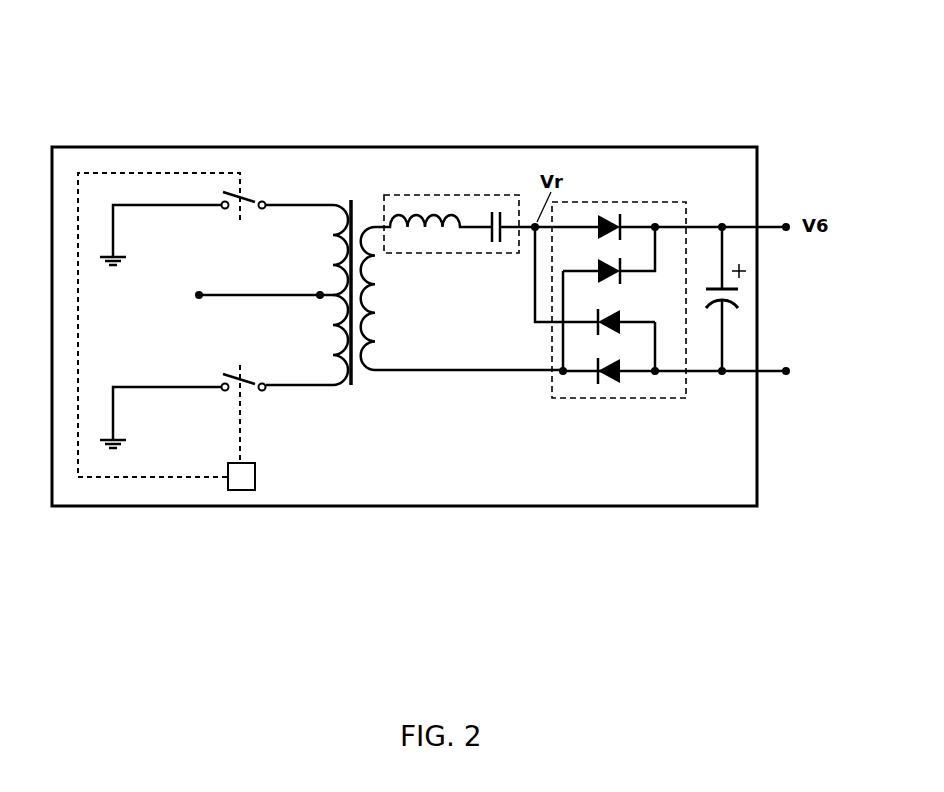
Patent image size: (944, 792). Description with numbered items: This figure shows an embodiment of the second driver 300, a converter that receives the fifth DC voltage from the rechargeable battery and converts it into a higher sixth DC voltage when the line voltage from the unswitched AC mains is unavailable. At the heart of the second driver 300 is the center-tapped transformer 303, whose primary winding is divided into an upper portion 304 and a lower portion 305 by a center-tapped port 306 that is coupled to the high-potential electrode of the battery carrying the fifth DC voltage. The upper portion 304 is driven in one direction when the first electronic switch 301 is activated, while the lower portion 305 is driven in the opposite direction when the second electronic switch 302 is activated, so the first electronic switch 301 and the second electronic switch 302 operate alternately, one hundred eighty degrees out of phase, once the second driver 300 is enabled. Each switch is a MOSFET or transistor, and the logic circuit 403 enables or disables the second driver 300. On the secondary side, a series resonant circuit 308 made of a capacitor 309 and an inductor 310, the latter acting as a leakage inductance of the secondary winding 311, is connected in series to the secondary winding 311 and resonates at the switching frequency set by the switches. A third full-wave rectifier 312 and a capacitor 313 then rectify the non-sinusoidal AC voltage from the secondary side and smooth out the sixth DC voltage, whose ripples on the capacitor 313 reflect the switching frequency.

The second driver 300 is at (560, 516).
The first electronic switch 301 is at (237, 195).
The second electronic switch 302 is at (240, 390).
The center-tapped transformer 303 is at (351, 192).
The upper portion 304 is at (328, 250).
The lower portion 305 is at (330, 328).
The center-tapped port 306 is at (318, 298).
The series resonant circuit 308 is at (517, 185).
The capacitor 309 is at (489, 210).
The inductor 310 is at (428, 212).
The secondary winding 311 is at (377, 282).
The third full-wave rectifier 312 is at (633, 192).
The capacitor 313 is at (740, 297).
The logic circuit 403 is at (240, 491).